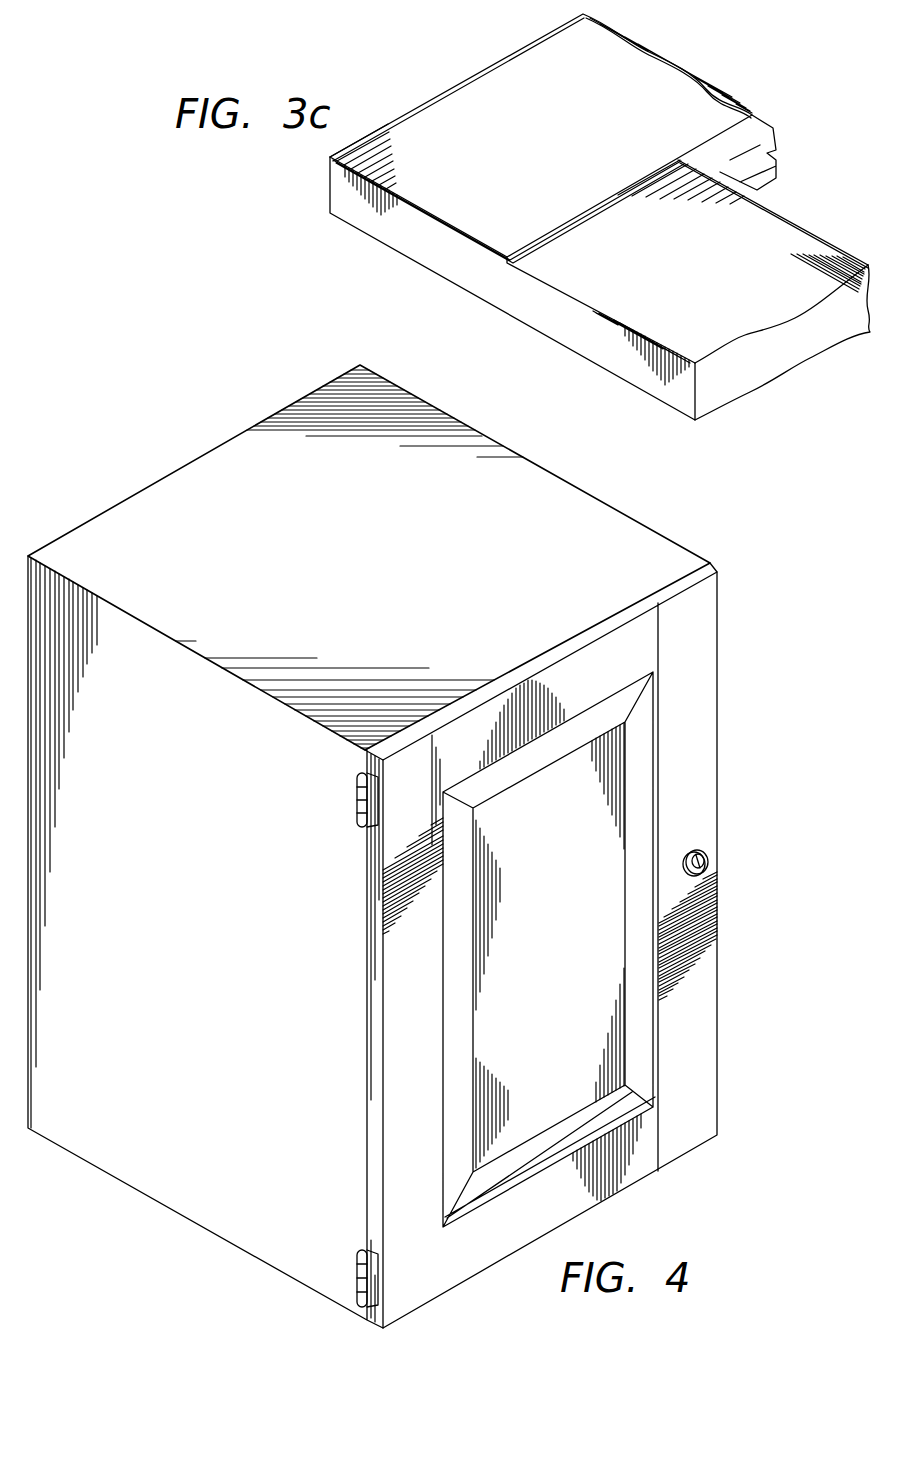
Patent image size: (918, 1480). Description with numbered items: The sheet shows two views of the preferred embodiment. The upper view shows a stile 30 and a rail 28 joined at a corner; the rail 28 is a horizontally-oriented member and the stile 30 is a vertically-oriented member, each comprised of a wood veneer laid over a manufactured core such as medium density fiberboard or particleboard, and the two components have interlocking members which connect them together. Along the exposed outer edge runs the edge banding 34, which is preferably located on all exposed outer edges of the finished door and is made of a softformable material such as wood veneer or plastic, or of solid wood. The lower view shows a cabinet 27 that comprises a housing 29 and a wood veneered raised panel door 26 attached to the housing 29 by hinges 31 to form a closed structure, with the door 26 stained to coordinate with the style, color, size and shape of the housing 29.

In FIG. 4, the raised panel door 26 is at (707, 647).
In FIG. 4, the cabinet 27 is at (743, 836).
In FIG. 3C, the rail 28 is at (790, 230).
In FIG. 4, the housing 29 is at (154, 496).
In FIG. 3C, the stile 30 is at (440, 108).
In FIG. 4, the hinge 31 is at (353, 818).
In FIG. 3C, the edge banding 34 is at (452, 265).